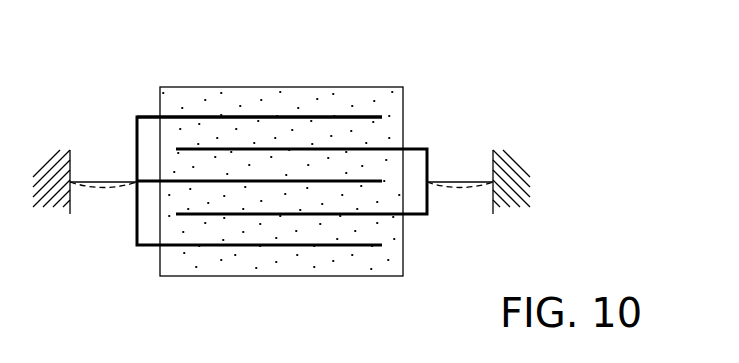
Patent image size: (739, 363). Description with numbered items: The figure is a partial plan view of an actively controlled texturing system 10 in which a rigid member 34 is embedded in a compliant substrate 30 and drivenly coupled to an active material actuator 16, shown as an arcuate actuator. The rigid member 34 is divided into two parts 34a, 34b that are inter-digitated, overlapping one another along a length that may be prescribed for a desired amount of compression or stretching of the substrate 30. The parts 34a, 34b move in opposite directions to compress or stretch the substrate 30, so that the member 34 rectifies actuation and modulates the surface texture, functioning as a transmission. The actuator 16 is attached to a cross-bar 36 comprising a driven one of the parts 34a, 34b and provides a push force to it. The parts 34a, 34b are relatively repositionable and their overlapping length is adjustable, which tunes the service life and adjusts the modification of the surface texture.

The system 10 is at (262, 62).
The actuator 16 is at (123, 181).
The compliant substrate 30 is at (347, 87).
The rigid member 34 is at (276, 180).
The first part of the rigid member 34a is at (138, 106).
The second part of the rigid member 34b is at (412, 132).
The cross-bar 36 is at (135, 137).